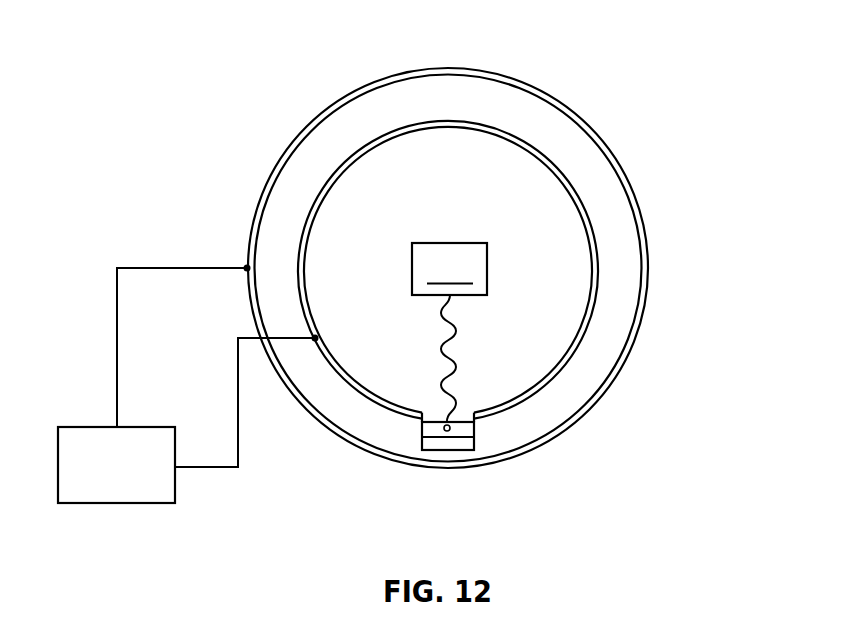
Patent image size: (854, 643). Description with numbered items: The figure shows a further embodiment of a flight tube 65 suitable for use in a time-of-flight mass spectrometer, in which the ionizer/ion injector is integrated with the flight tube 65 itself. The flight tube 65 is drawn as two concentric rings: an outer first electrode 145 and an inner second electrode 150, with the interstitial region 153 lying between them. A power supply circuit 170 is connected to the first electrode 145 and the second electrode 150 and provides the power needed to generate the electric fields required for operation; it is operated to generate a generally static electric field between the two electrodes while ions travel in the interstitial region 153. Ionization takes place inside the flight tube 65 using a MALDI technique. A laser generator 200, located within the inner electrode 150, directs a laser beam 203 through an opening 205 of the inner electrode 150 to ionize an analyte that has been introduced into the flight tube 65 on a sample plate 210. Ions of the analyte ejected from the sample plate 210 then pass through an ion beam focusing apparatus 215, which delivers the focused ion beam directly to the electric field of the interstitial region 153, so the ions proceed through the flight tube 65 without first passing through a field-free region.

The flight tube 65 is at (263, 93).
The first electrode 145 is at (633, 181).
The second electrode 150 is at (597, 255).
The interstitial region 153 is at (558, 132).
The power supply circuit 170 is at (97, 426).
The laser generator 200 is at (449, 269).
The laser beam 203 is at (455, 371).
The opening 205 is at (474, 425).
The sample plate 210 is at (447, 451).
The ion beam focusing apparatus 215 is at (422, 430).